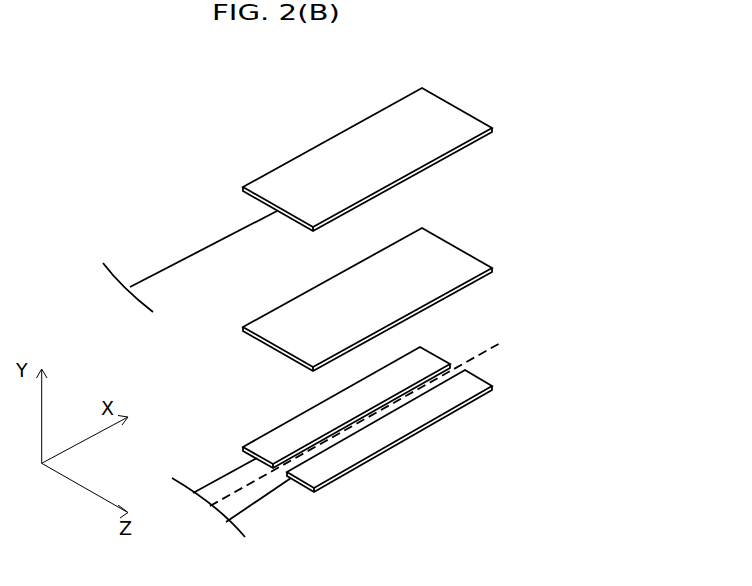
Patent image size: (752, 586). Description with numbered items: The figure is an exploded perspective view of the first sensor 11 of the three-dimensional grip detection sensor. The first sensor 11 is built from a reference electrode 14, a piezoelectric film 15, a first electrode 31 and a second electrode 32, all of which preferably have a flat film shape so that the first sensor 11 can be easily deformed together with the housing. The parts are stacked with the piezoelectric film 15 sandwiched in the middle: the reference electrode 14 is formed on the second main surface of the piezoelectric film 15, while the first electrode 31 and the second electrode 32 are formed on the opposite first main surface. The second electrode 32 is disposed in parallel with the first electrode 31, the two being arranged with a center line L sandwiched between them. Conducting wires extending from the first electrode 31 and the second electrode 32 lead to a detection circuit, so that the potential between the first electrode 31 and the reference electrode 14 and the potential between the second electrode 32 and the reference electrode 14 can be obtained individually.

The first sensor 11 is at (575, 49).
The reference electrode 14 is at (455, 104).
The piezoelectric film 15 is at (458, 242).
The first electrode 31 is at (483, 385).
The second electrode 32 is at (450, 360).
The center line L is at (250, 484).